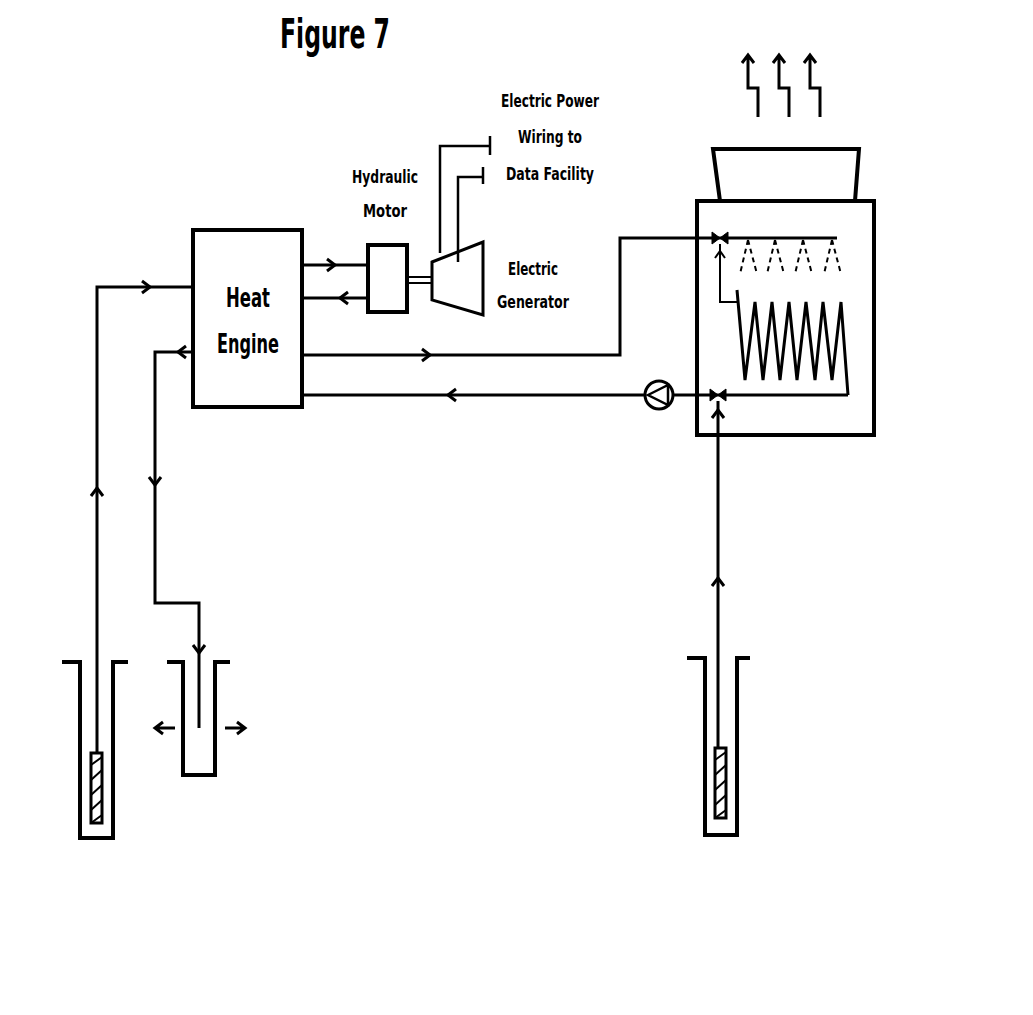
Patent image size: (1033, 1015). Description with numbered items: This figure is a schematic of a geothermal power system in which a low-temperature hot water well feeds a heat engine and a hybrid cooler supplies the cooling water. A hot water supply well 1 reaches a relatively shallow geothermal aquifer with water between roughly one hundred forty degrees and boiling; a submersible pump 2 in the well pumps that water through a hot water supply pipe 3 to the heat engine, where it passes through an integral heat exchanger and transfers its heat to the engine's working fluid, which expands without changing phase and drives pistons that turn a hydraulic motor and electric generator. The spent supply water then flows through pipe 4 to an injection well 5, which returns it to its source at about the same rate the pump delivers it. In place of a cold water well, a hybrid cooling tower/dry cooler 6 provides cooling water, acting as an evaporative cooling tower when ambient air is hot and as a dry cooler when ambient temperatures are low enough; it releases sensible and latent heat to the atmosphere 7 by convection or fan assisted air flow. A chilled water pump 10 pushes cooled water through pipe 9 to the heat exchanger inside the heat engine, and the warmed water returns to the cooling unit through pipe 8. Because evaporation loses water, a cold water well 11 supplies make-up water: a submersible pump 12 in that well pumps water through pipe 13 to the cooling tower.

The hot water supply well 1 is at (100, 852).
The submersible pump 2 is at (82, 782).
The hot water supply pipe 3 is at (105, 270).
The pipe 4 is at (166, 418).
The injection well 5 is at (224, 773).
The hybrid cooling tower/dry cooler 6 is at (884, 333).
The atmosphere 7 is at (840, 58).
The pipe 8 is at (635, 225).
The pipe 9 is at (536, 408).
The chilled water pump 10 is at (644, 425).
The cold water well 11 is at (746, 811).
The submersible pump 12 is at (704, 789).
The pipe 13 is at (708, 520).